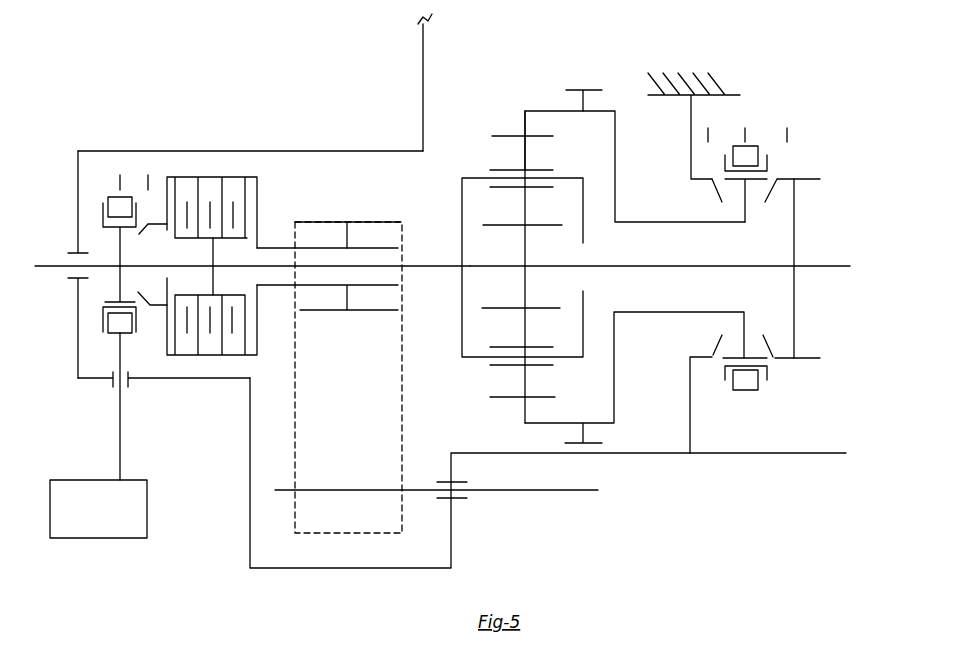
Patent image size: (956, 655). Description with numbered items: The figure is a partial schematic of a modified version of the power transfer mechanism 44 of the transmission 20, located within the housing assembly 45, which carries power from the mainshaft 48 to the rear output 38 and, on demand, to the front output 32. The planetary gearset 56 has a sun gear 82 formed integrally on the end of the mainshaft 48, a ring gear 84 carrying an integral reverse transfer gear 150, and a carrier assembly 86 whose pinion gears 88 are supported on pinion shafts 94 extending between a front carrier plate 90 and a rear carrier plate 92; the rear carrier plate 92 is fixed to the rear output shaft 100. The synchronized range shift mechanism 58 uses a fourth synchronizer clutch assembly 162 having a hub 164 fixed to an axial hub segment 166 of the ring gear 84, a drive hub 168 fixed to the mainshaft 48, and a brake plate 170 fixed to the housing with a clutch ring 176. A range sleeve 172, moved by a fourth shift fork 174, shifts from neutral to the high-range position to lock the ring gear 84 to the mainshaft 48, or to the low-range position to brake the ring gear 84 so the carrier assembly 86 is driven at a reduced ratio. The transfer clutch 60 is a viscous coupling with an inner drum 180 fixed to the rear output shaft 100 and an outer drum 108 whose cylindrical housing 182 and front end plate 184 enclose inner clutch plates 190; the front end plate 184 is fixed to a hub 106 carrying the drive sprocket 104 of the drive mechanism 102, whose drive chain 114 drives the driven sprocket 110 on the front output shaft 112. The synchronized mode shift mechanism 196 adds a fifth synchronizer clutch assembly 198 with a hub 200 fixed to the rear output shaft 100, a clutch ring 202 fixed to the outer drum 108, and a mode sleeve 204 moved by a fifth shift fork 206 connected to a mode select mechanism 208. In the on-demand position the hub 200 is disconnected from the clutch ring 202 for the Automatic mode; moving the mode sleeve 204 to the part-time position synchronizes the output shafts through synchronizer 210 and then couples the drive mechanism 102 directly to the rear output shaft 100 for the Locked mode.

The transmission 20 is at (703, 507).
The front output 32 is at (570, 495).
The rear output 38 is at (40, 262).
The power transfer mechanism 44 is at (421, 202).
The housing assembly 45 is at (244, 149).
The mainshaft 48 is at (846, 270).
The planetary gearset 56 is at (484, 116).
The synchronized range shift mechanism 58 is at (789, 153).
The transfer clutch 60 is at (197, 358).
The sun gear 82 is at (525, 247).
The ring gear 84 is at (533, 110).
The carrier assembly 86 is at (478, 360).
The pinion gears 88 is at (525, 150).
The front carrier plate 90 is at (583, 225).
The rear carrier plate 92 is at (462, 297).
The pinion shafts 94 is at (560, 178).
The rear output shaft 100 is at (55, 268).
The drive mechanism 102 is at (274, 398).
The drive sprocket 104 is at (357, 222).
The hub 106 is at (275, 248).
The outer drum 108 is at (213, 176).
The driven sprocket 110 is at (318, 535).
The front output shaft 112 is at (528, 490).
The drive chain 114 is at (300, 345).
The reverse transfer gear 150 is at (597, 90).
The fourth synchronizer clutch assembly 162 is at (780, 373).
The hub 164 is at (745, 200).
The axial hub segment 166 is at (650, 312).
The drive hub 168 is at (794, 241).
The brake plate 170 is at (690, 388).
The range sleeve 172 is at (726, 378).
The fourth shift fork 174 is at (747, 391).
The clutch ring 176 is at (692, 192).
The inner drum 180 is at (218, 250).
The cylindrical housing 182 is at (218, 358).
The front end plate 184 is at (260, 192).
The inner clutch plates 190 is at (233, 300).
The synchronized mode shift mechanism 196 is at (100, 418).
The fifth synchronizer clutch assembly 198 is at (97, 195).
The hub 200 is at (107, 318).
The clutch ring 202 is at (164, 214).
The mode sleeve 204 is at (97, 377).
The fifth shift fork 206 is at (143, 366).
The mode select mechanism 208 is at (147, 513).
The synchronizer 210 is at (156, 234).